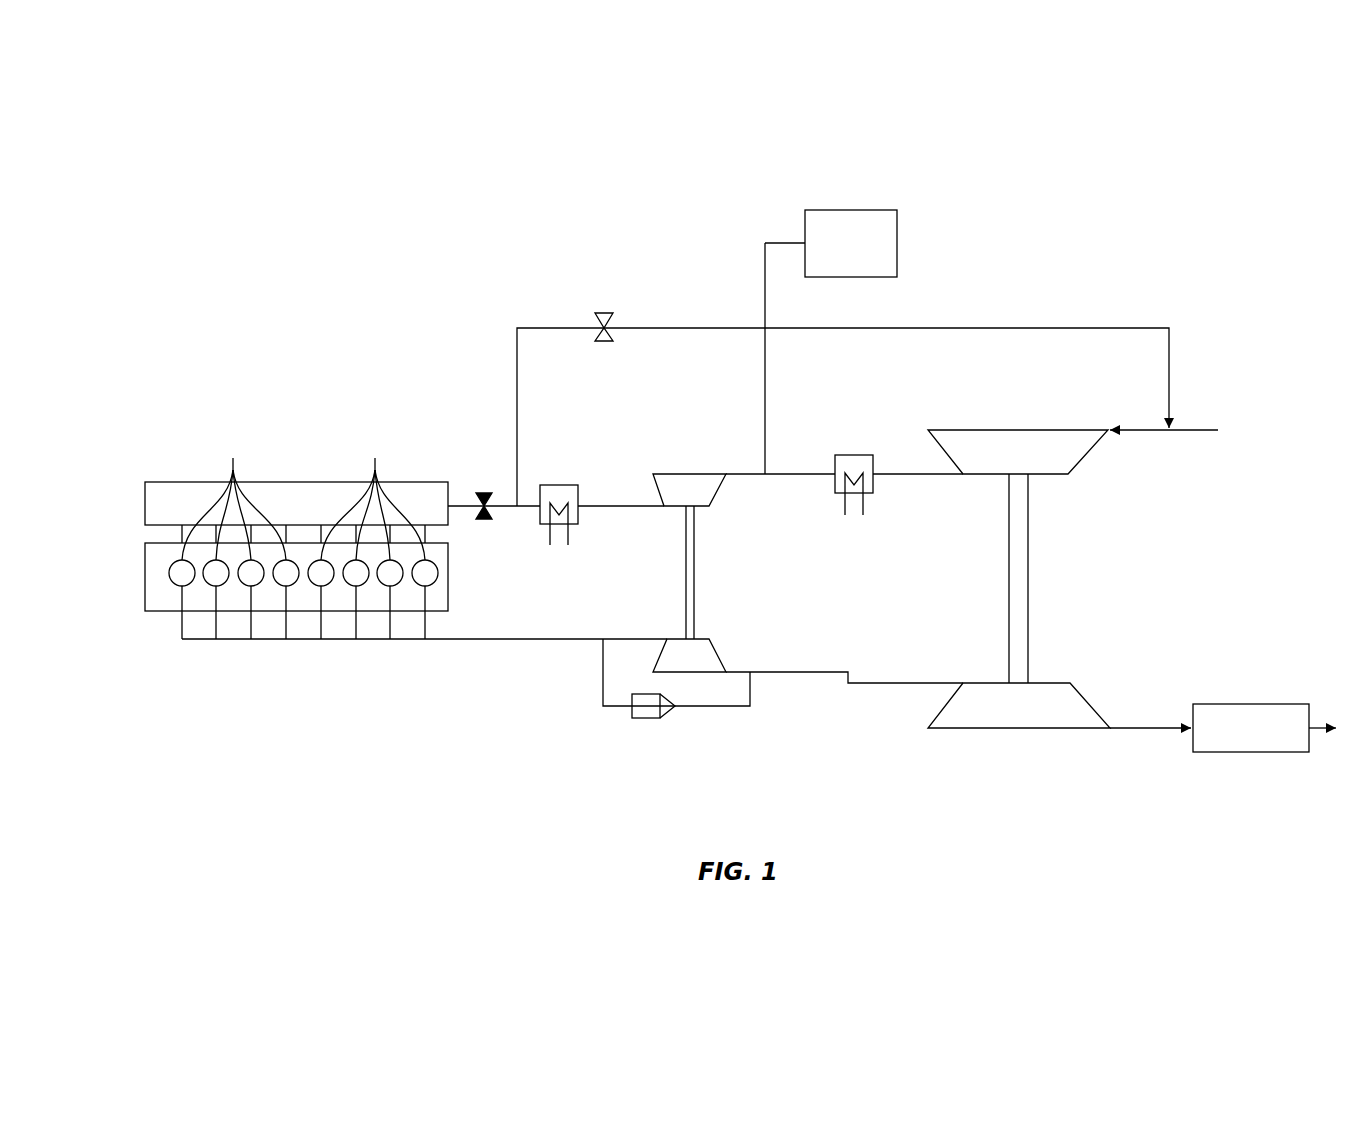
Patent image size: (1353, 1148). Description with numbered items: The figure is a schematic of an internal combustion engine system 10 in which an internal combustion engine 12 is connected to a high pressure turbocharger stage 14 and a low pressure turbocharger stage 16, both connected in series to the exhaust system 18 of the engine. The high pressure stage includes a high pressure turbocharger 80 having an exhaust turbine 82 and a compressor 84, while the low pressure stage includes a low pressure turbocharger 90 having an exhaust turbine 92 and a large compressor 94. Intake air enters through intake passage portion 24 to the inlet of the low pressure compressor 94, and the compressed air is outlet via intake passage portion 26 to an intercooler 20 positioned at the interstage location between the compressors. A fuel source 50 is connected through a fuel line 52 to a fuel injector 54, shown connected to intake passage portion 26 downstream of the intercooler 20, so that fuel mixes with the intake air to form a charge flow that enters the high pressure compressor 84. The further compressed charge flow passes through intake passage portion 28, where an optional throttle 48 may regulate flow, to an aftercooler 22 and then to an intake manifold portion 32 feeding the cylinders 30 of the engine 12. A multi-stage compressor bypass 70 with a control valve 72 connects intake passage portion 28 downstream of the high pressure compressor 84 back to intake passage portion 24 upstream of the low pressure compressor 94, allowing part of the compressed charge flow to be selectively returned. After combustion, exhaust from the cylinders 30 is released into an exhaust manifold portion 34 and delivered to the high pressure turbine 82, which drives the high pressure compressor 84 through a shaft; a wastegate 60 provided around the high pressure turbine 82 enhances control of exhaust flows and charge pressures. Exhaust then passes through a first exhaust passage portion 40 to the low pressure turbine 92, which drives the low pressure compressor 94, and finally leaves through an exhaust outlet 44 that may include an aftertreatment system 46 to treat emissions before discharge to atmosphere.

The internal combustion engine system 10 is at (1018, 186).
The internal combustion engine 12 is at (145, 578).
The high pressure turbocharger stage 14 is at (603, 737).
The low pressure turbocharger stage 16 is at (1016, 762).
The exhaust system 18 is at (482, 660).
The intercooler 20 is at (853, 455).
The aftercooler 22 is at (560, 485).
The intake passage portion 24 is at (1200, 430).
The intake passage portion 26 is at (910, 474).
The intake passage portion 28 is at (620, 506).
The cylinders 30 is at (303, 496).
The intake manifold portion 32 is at (145, 500).
The exhaust manifold portion 34 is at (298, 640).
The first exhaust passage portion 40 is at (847, 683).
The exhaust outlet 44 is at (1150, 728).
The aftertreatment system 46 is at (1250, 752).
The throttle 48 is at (484, 490).
The fuel source 50 is at (838, 257).
The fuel line 52 is at (765, 283).
The fuel injector 54 is at (765, 450).
The wastegate 60 is at (645, 718).
The multi-stage compressor bypass 70 is at (1040, 325).
The control valve 72 is at (604, 313).
The high pressure turbocharger 80 is at (666, 583).
The high pressure turbine 82 is at (715, 657).
The high pressure compressor 84 is at (715, 488).
The low pressure turbocharger 90 is at (999, 605).
The low pressure turbine 92 is at (1090, 705).
The low pressure compressor 94 is at (1090, 452).